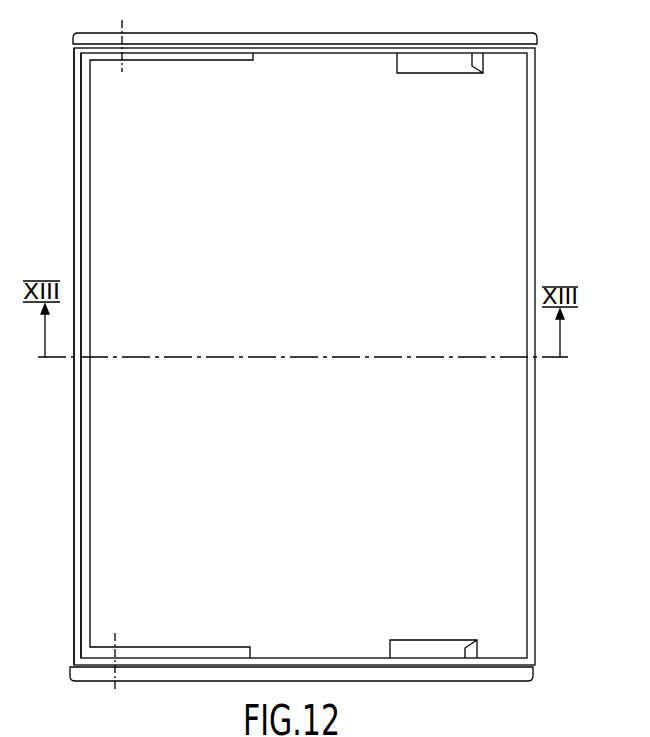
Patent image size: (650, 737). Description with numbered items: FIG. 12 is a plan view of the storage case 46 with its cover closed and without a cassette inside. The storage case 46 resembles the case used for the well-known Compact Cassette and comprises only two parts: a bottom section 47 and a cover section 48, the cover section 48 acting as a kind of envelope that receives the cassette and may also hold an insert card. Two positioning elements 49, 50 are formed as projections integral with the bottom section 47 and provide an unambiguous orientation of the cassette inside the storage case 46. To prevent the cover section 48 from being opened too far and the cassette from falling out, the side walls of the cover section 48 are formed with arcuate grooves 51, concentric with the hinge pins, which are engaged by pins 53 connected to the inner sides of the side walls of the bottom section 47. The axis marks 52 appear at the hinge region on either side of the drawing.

The storage case 46 is at (577, 497).
The bottom section 47 is at (413, 33).
The cover section 48 is at (68, 452).
The positioning element 49 is at (480, 653).
The positioning element 50 is at (483, 68).
The arcuate groove 51 is at (171, 395).
The fastening pin axis 52 is at (119, 46).
The pin 53 is at (301, 702).